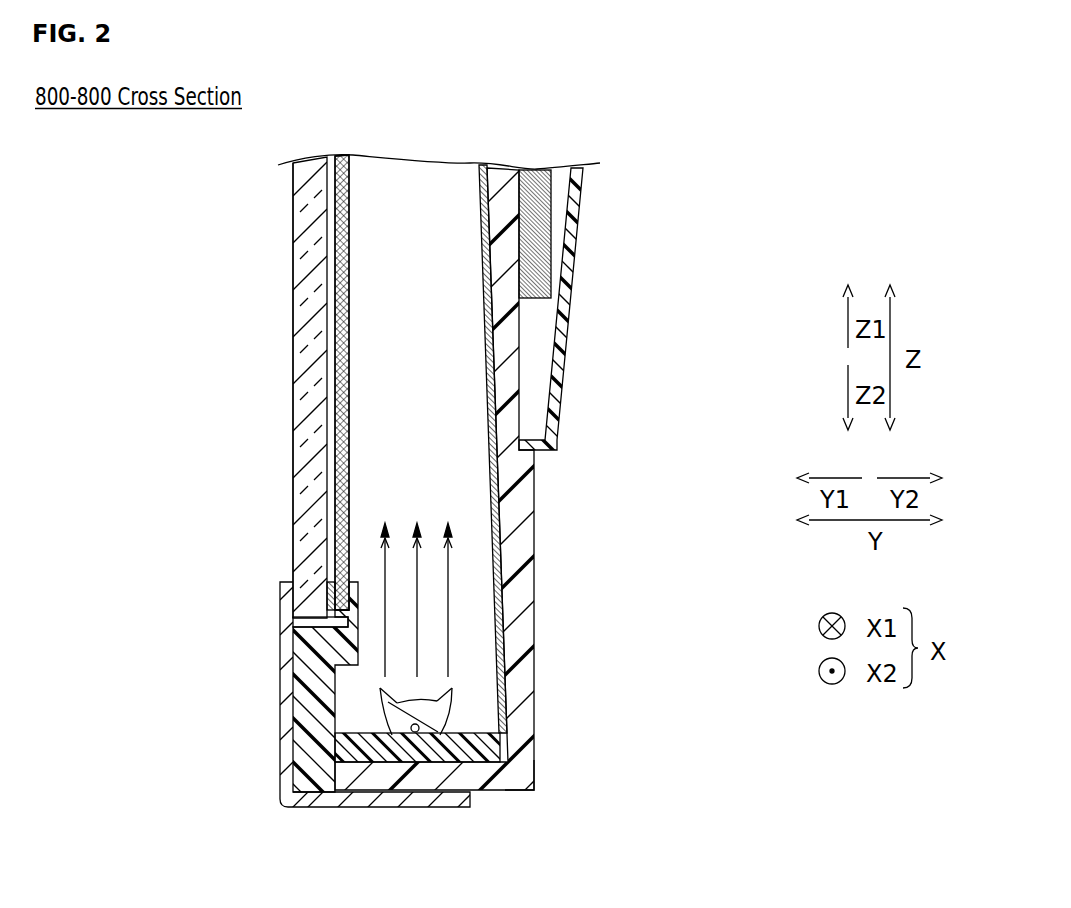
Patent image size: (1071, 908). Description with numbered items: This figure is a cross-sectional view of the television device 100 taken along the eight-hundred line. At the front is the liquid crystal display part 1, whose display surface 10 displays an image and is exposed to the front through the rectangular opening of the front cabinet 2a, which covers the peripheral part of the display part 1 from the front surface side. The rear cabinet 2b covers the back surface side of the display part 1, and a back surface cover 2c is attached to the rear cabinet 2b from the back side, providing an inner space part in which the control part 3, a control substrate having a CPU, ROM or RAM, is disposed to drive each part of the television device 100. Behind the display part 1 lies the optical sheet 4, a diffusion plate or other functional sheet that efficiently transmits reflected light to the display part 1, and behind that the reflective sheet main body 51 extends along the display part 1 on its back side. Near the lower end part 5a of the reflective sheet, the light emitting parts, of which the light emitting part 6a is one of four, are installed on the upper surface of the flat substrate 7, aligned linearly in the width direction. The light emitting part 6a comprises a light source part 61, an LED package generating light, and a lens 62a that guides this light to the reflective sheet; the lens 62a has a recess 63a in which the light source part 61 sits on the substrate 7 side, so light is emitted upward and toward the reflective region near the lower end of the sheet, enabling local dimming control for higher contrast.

The television device 100 is at (218, 201).
The liquid crystal display part 1 is at (305, 488).
The display surface 10 is at (295, 398).
The optical sheet 4 is at (340, 550).
The front cabinet 2a is at (293, 628).
The rear cabinet 2b is at (527, 625).
The back surface cover 2c is at (575, 213).
The control part 3 is at (537, 264).
The reflective sheet main body 51 is at (497, 516).
The lower end part 5a is at (535, 784).
The light source part 61 is at (389, 762).
The lens 62a is at (395, 708).
The recess 63a is at (420, 732).
The light emitting part 6a is at (468, 714).
The substrate 7 is at (491, 763).